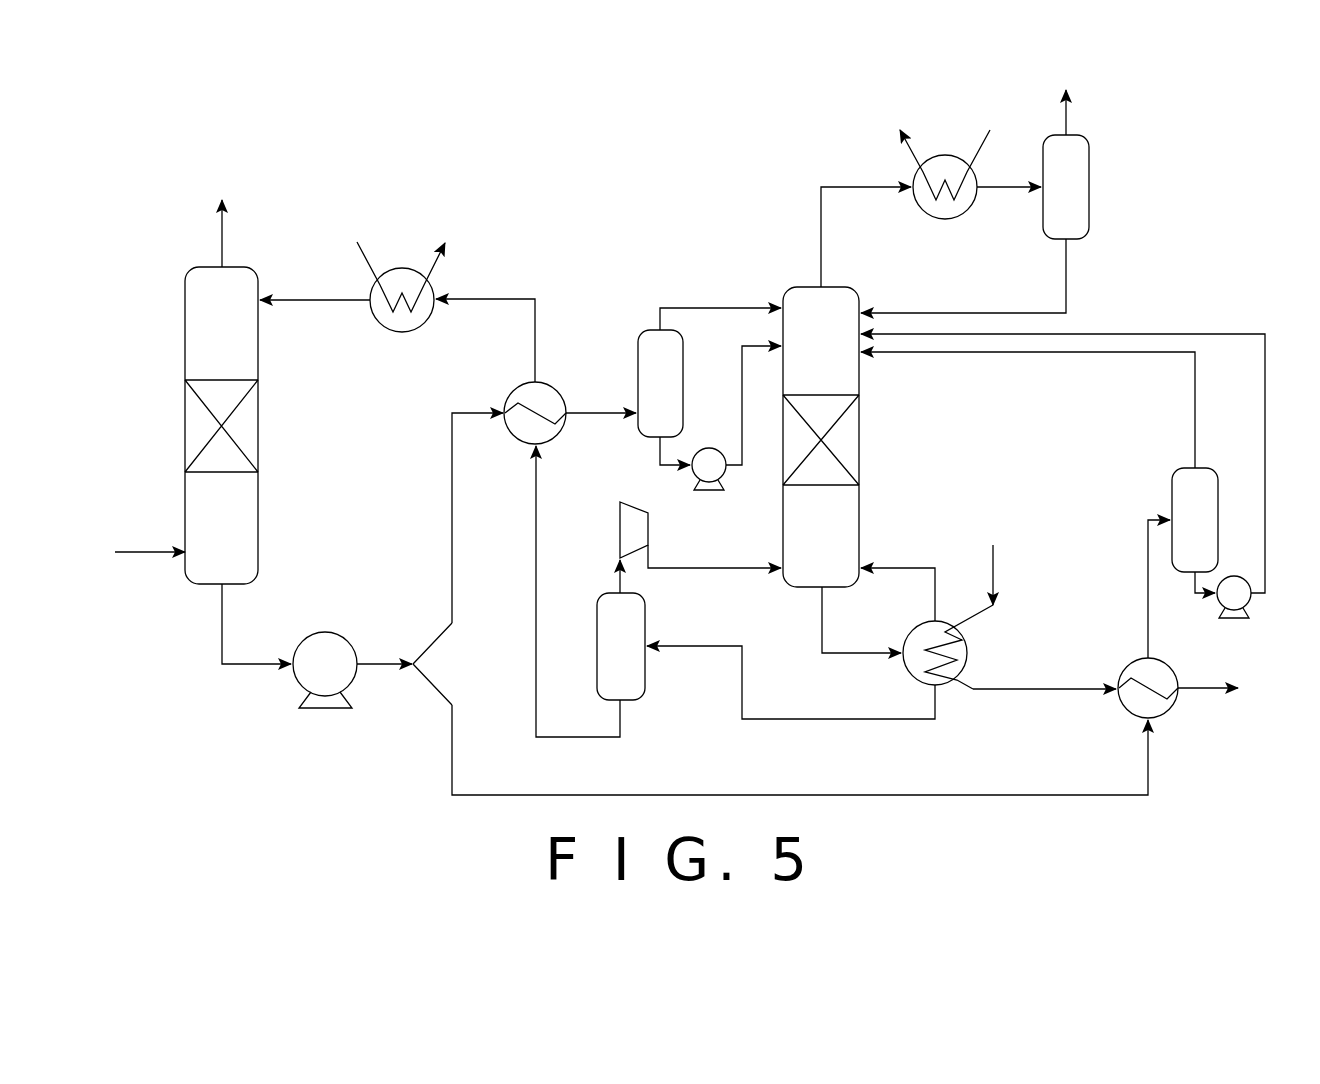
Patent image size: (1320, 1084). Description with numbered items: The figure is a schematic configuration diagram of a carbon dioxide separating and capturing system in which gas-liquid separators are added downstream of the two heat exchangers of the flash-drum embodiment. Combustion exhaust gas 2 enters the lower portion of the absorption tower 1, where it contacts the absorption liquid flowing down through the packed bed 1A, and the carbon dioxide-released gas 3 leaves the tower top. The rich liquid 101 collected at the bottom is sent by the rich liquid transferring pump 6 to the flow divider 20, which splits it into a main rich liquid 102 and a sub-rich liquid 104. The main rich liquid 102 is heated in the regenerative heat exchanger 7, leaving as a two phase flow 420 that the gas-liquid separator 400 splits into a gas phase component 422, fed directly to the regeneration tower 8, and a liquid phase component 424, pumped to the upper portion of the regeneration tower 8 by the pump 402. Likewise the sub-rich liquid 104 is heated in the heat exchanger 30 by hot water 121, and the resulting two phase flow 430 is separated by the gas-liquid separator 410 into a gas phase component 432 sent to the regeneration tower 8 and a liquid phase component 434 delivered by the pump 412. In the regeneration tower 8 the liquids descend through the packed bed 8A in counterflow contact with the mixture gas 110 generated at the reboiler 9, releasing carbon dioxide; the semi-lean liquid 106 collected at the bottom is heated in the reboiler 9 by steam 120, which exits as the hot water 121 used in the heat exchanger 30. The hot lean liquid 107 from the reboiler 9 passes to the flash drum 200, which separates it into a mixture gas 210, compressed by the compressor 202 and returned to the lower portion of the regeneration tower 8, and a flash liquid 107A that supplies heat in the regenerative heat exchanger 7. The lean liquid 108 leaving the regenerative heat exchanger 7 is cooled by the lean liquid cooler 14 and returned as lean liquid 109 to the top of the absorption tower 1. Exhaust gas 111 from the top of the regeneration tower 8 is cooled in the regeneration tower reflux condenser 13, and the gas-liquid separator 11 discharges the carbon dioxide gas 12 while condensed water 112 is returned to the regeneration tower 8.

The absorption tower 1 is at (182, 331).
The packed bed 1A is at (247, 431).
The combustion exhaust gas 2 is at (143, 551).
The carbon dioxide-released gas 3 is at (220, 236).
The rich liquid transferring pump 6 is at (327, 630).
The regenerative heat exchanger 7 is at (512, 392).
The regeneration tower 8 is at (798, 286).
The packed bed 8A is at (843, 442).
The reboiler 9 is at (912, 630).
The gas-liquid separator 11 is at (1090, 189).
The carbon dioxide gas 12 is at (1068, 118).
The regeneration tower reflux condenser 13 is at (953, 221).
The lean liquid cooler 14 is at (398, 333).
The flow divider 20 is at (425, 686).
The heat exchanger 30 is at (1168, 710).
The rich liquid 101 is at (222, 639).
The main rich liquid 102 is at (450, 506).
The sub-rich liquid 104 is at (762, 796).
The semi-lean liquid 106 is at (821, 612).
The lean liquid 107 is at (828, 720).
The flash liquid 107A is at (577, 738).
The lean liquid 108 is at (493, 298).
The lean liquid 109 is at (310, 298).
The mixture gas 110 is at (900, 567).
The exhaust gas 111 is at (822, 258).
The condensed water 112 is at (1068, 274).
The steam 120 is at (996, 560).
The hot water 121 is at (1022, 691).
The flash drum 200 is at (645, 684).
The compressor 202 is at (618, 522).
The mixture gas 210 is at (618, 580).
The gas-liquid separator 400 is at (636, 356).
The pump 402 is at (708, 492).
The gas-liquid separator 410 is at (1170, 481).
The pump 412 is at (1240, 617).
The two phase flow 420 is at (603, 411).
The gas phase component 422 is at (700, 307).
The liquid phase component 424 is at (660, 462).
The two phase flow 430 is at (1147, 605).
The gas phase component 432 is at (1194, 397).
The liquid phase component 434 is at (1190, 596).